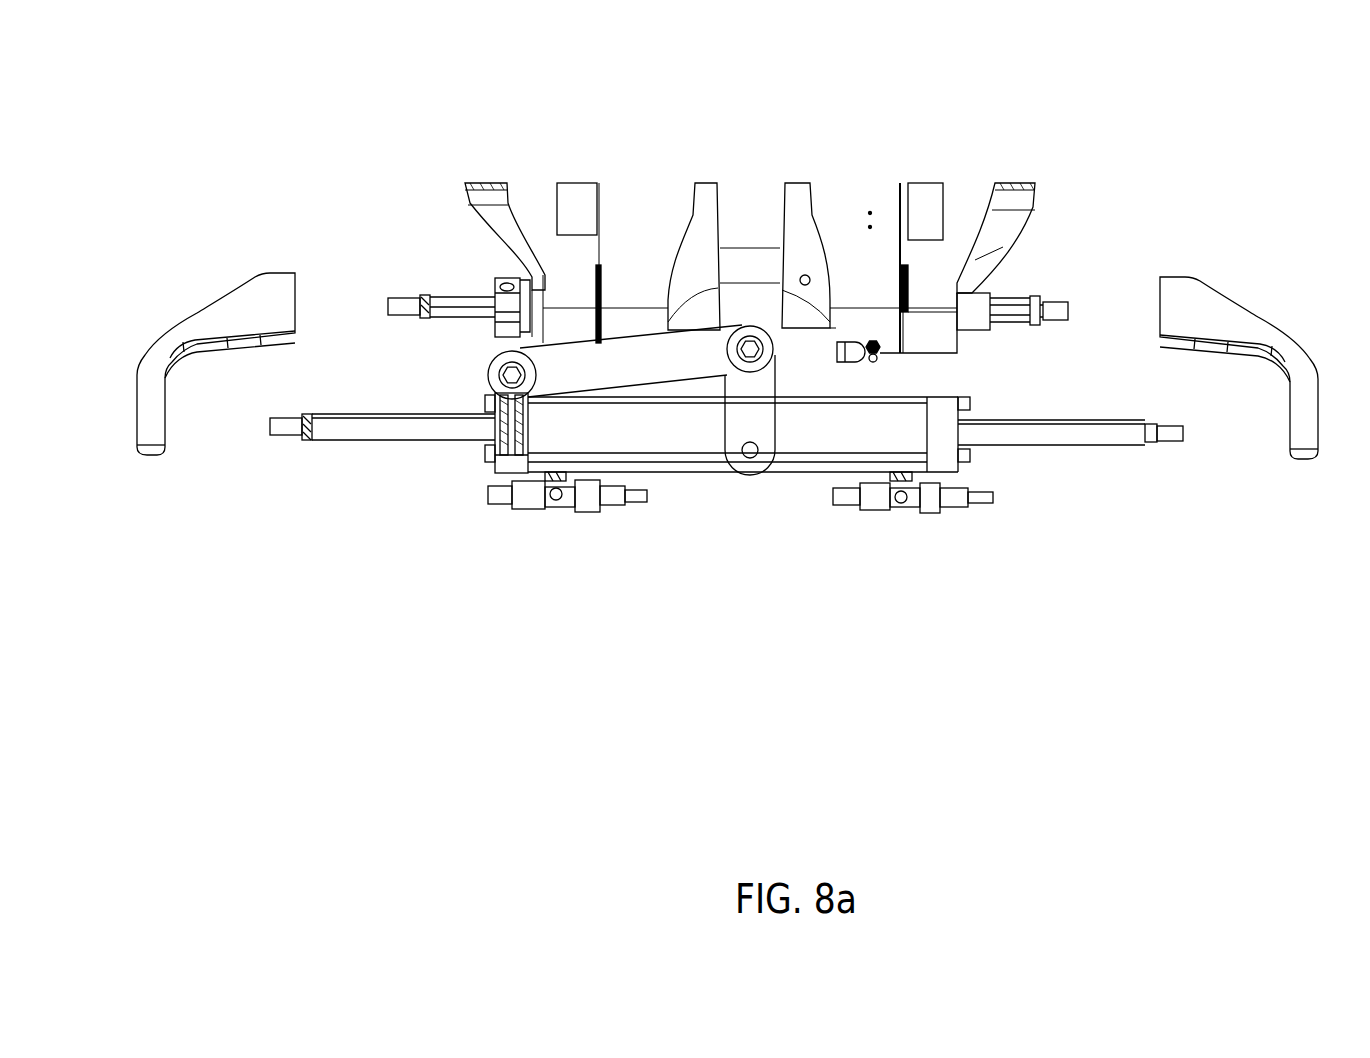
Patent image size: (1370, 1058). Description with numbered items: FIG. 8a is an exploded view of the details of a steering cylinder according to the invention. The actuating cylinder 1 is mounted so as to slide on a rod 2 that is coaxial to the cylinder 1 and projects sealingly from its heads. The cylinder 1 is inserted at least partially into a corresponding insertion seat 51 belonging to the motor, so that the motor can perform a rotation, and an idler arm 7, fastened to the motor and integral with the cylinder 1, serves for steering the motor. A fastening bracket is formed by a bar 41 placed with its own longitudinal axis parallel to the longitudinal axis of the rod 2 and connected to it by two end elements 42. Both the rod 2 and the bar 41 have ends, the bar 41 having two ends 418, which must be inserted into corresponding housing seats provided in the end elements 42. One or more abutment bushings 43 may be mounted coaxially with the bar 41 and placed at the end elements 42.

The cylinder 1 is at (688, 440).
The rod 2 is at (405, 428).
The idler arm 7 is at (639, 357).
The bar 41 is at (1036, 276).
The end elements 42 is at (157, 465).
The abutment bushing 43 is at (493, 290).
The insertion seat 51 is at (968, 185).
The ends 418 is at (494, 323).